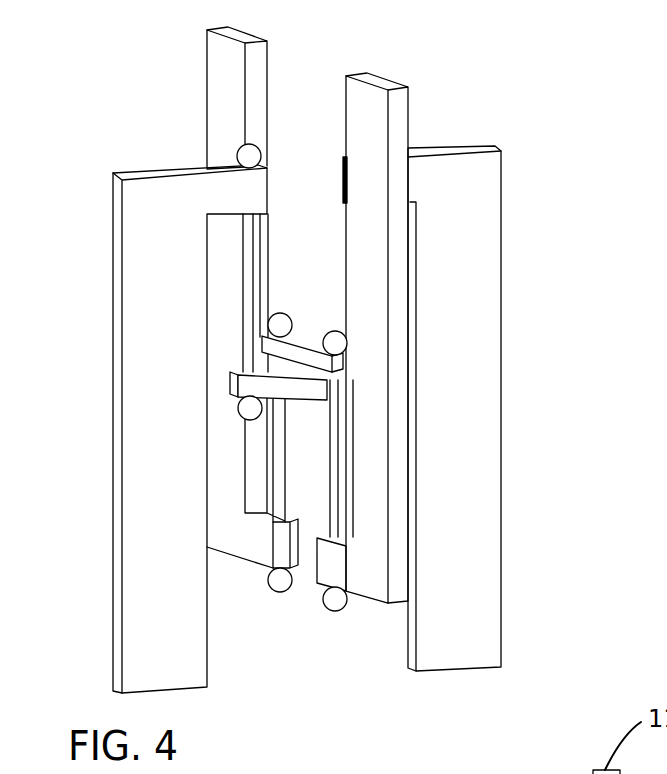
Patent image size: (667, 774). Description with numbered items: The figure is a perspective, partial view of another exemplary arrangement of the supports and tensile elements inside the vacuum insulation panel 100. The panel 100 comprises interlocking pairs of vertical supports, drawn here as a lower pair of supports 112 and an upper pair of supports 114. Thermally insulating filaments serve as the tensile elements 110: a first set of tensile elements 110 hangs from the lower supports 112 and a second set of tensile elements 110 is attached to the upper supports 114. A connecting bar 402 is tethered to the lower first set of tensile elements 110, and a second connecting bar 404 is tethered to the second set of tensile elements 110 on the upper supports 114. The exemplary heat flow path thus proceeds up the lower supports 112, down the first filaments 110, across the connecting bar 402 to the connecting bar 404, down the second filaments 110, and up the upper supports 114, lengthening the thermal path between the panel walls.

The vacuum insulation panel 100 is at (541, 98).
The tensile elements 110 is at (252, 253).
The support 112 is at (150, 272).
The support 114 is at (223, 79).
The connecting bar 402 is at (297, 383).
The connecting bar 404 is at (297, 355).